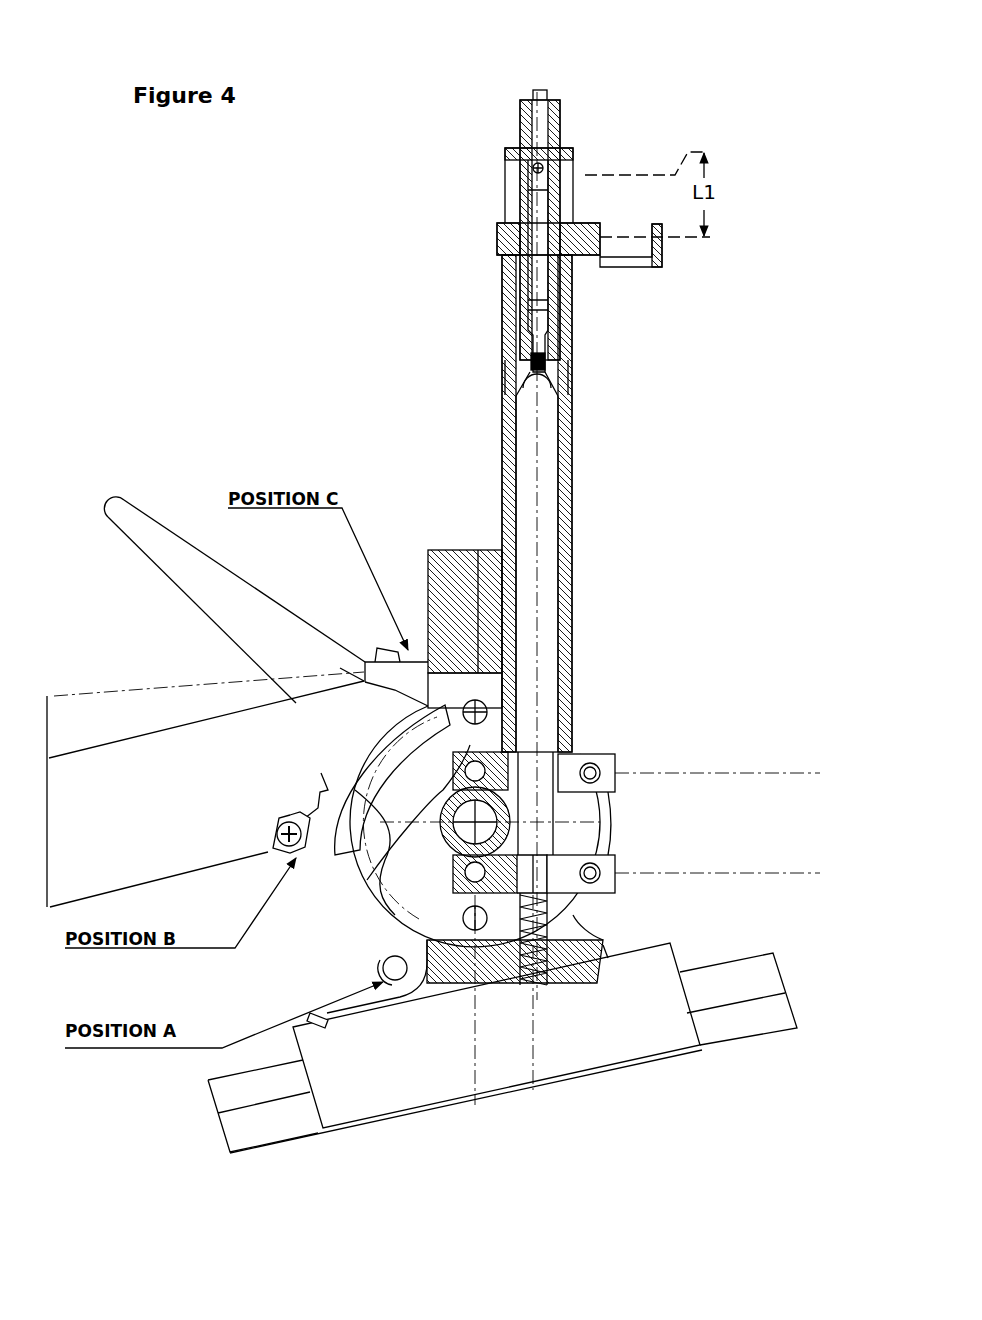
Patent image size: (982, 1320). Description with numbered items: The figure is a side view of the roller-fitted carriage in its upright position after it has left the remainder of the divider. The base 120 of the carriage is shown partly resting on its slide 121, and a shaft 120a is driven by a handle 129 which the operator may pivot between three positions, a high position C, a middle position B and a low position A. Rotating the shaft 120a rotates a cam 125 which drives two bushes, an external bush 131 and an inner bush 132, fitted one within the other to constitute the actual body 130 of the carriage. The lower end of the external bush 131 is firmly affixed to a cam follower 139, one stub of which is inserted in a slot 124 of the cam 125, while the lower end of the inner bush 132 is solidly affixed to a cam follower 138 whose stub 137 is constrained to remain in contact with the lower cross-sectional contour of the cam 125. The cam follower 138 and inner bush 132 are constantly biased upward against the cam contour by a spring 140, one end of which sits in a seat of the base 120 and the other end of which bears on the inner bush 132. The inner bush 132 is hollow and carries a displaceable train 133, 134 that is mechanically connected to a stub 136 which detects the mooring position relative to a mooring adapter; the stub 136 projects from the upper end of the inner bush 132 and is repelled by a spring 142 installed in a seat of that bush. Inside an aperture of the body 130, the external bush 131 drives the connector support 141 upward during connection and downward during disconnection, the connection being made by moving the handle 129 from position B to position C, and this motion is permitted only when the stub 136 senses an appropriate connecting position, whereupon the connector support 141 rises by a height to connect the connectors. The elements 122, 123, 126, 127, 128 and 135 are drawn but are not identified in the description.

The base 120 is at (397, 1085).
The shaft 120a is at (500, 796).
The slide 121 is at (225, 1097).
The cam surface 122 is at (317, 785).
The hex nut 123 is at (317, 810).
The slot 124 is at (357, 778).
The cam 125 is at (372, 880).
The stop roller 126 is at (380, 958).
The handle plate 127 is at (140, 742).
The handle plate edge 128 is at (176, 698).
The handle 129 is at (128, 512).
The body 130 is at (523, 470).
The external bush 131 is at (517, 430).
The inner bush 132 is at (520, 377).
The displaceable train 133 is at (531, 327).
The displaceable train 134 is at (520, 288).
The flange 135 is at (497, 238).
The stub 136 is at (540, 94).
The stub 137 is at (450, 872).
The cam follower 138 is at (618, 889).
The cam follower 139 is at (618, 787).
The spring 140 is at (547, 980).
The connector support 141 is at (664, 260).
The spring 142 is at (490, 378).